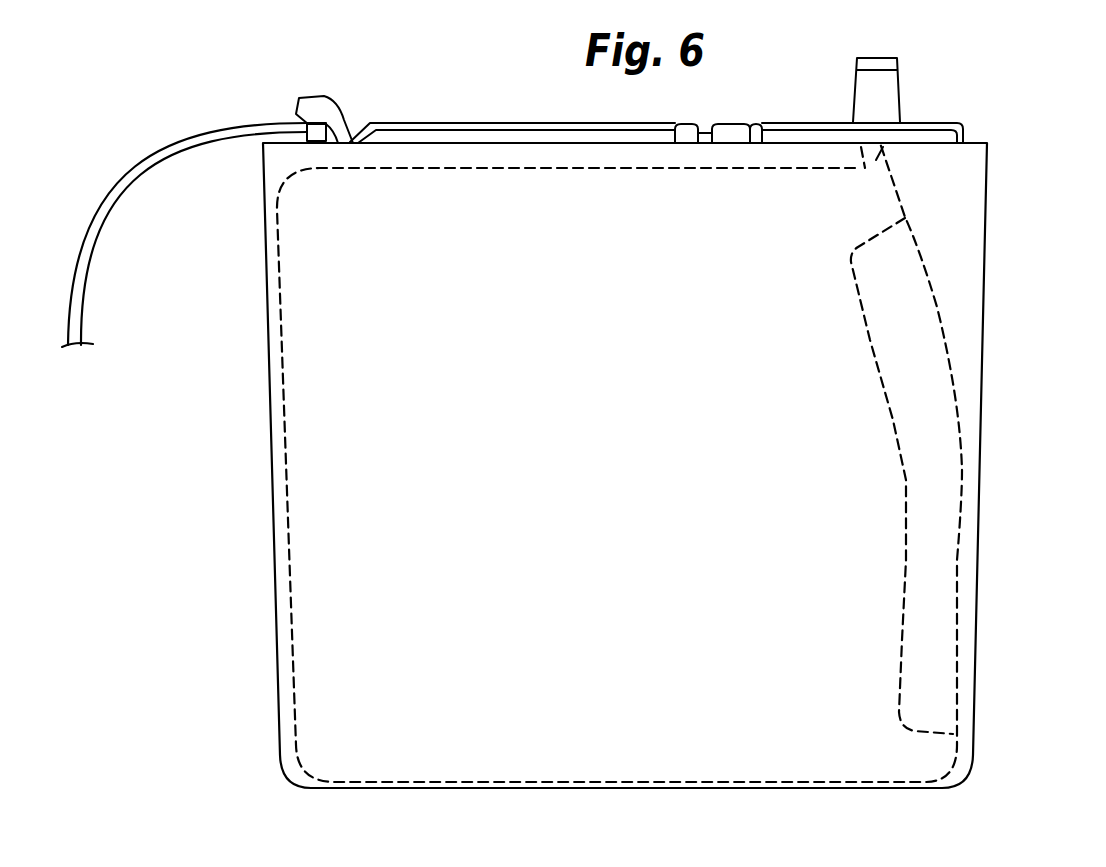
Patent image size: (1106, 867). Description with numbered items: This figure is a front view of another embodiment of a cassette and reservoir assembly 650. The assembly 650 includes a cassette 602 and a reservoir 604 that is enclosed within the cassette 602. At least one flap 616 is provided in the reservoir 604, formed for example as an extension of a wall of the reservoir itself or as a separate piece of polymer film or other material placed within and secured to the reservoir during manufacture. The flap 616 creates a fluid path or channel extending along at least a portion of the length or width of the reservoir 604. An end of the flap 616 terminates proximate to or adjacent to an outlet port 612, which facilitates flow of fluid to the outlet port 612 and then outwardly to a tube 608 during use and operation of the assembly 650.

The cassette 602 is at (986, 226).
The reservoir 604 is at (937, 308).
The tube 608 is at (192, 143).
The outlet port 612 is at (877, 160).
The flap 616 is at (928, 473).
The cassette and reservoir assembly 650 is at (636, 832).